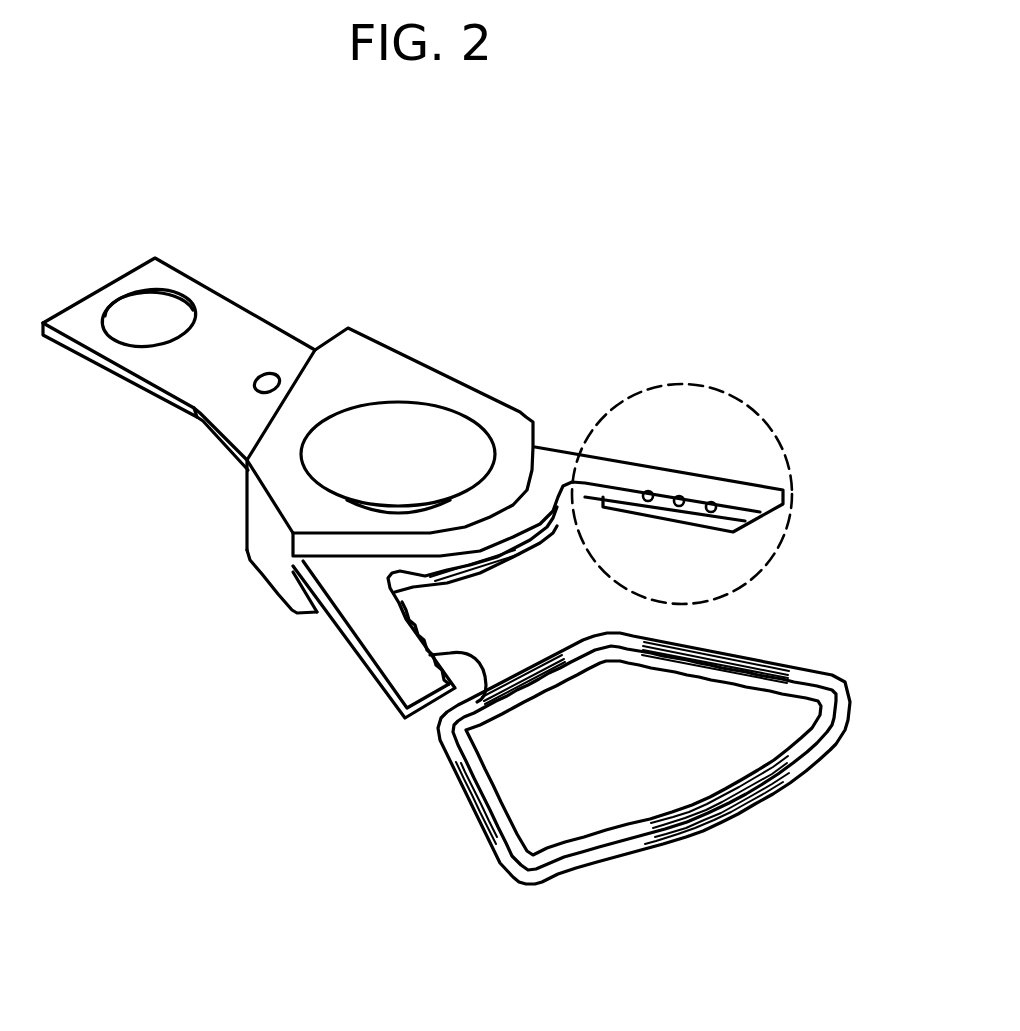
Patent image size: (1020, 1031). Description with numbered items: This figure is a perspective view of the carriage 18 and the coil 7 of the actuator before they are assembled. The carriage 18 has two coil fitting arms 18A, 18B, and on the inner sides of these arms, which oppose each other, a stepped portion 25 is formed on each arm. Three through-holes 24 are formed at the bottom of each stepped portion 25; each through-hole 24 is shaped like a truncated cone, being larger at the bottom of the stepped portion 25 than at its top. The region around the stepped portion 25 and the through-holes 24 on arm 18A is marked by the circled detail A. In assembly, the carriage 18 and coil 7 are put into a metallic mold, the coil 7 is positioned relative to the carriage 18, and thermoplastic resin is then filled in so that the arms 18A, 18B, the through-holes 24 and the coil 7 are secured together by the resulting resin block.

The coil 7 is at (832, 672).
The carriage 18 is at (403, 373).
The coil fitting arm 18A is at (617, 473).
The coil fitting arm 18B is at (368, 633).
The through-holes 24 is at (713, 502).
The stepped portion 25 is at (712, 528).
The enlarged detail region A is at (722, 390).